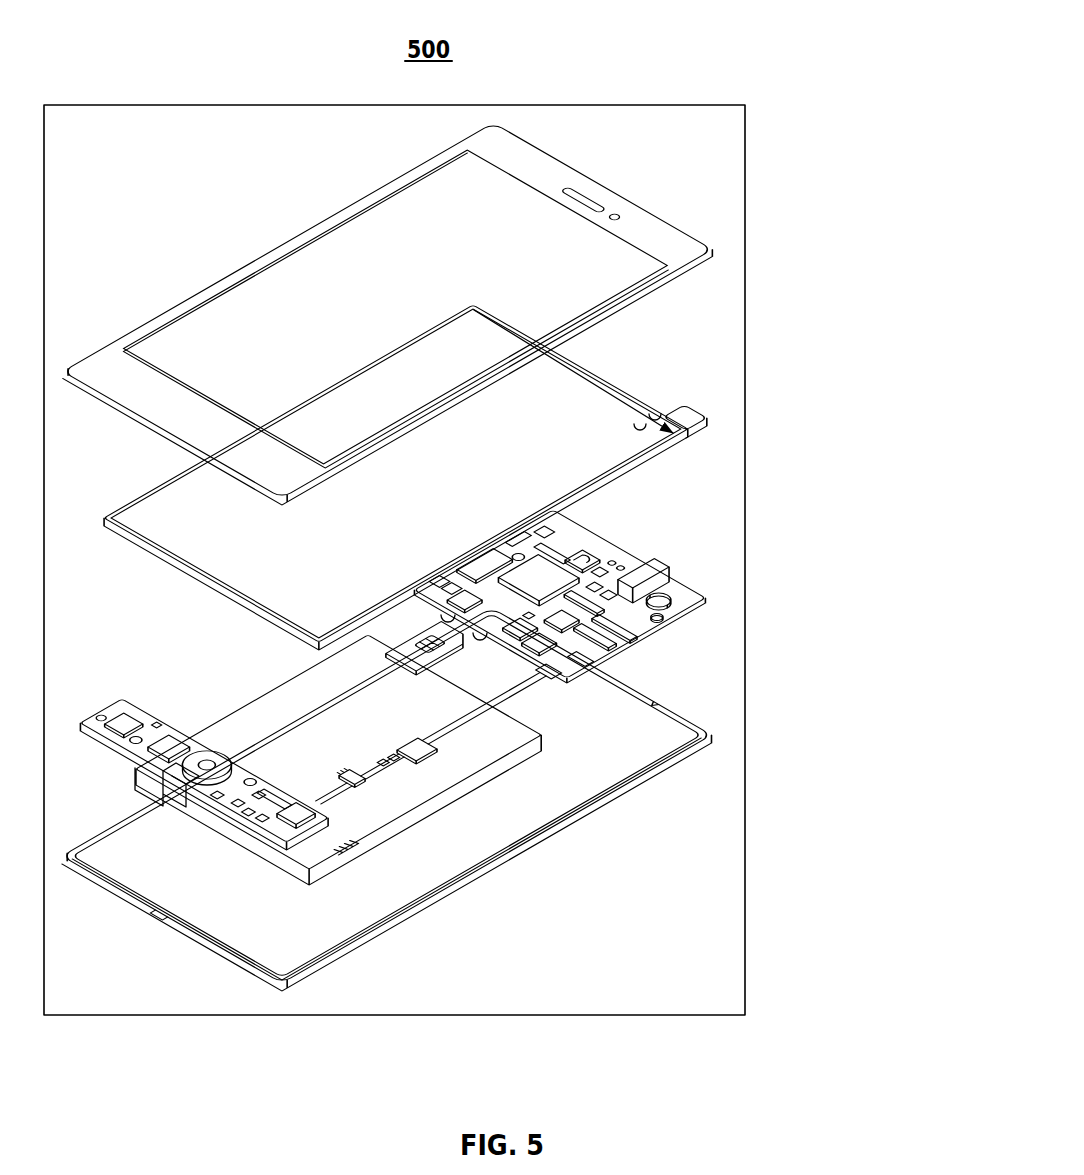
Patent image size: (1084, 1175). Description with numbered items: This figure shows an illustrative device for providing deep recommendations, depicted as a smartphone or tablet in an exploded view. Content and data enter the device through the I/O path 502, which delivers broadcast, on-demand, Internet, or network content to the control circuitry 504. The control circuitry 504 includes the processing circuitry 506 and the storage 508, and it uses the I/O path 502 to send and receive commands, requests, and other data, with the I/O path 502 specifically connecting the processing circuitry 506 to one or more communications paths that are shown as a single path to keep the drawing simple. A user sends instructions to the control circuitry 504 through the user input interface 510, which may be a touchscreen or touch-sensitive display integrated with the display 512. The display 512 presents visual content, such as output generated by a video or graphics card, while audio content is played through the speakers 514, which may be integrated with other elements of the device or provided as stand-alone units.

The I/O path 502 is at (200, 783).
The control circuitry 504 is at (633, 647).
The processing circuitry 506 is at (558, 588).
The storage 508 is at (635, 637).
The user input interface 510 is at (627, 427).
The display 512 is at (673, 433).
The speakers 514 is at (592, 197).